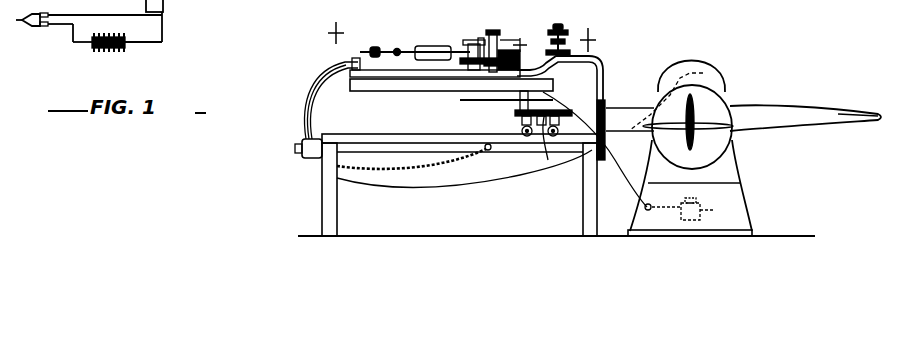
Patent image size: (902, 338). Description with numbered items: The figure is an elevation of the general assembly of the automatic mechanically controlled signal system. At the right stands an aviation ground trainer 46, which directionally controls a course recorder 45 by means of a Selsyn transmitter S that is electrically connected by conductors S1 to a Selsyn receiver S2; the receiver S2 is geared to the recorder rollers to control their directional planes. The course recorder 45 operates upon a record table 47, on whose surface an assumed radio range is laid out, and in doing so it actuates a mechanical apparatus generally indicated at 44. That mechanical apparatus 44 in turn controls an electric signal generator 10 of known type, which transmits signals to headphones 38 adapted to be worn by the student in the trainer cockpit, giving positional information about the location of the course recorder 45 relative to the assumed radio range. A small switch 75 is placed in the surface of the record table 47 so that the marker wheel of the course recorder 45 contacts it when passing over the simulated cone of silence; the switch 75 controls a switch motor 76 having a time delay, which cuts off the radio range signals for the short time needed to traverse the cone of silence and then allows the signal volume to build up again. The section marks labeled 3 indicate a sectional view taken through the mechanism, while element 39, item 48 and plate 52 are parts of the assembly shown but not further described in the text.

The section line of FIG. 3 is at (467, 31).
The electric signal generator 10 is at (308, 160).
The headphones 38 is at (712, 63).
The belt 39 is at (428, 190).
The mechanical apparatus 44 is at (608, 49).
The course recorder 45 is at (562, 124).
The aviation ground trainer 46 is at (746, 193).
The record table 47 is at (394, 142).
The adjusting screw 48 is at (556, 67).
The support plate 52 is at (428, 90).
The switch 75 is at (493, 140).
The switch motor 76 is at (176, 2).
The Selsyn transmitter S is at (686, 209).
The conductors S1 is at (628, 198).
The Selsyn receiver S2 is at (548, 160).